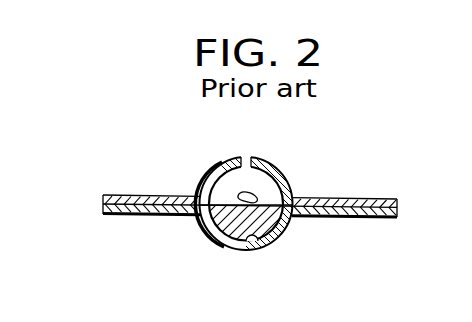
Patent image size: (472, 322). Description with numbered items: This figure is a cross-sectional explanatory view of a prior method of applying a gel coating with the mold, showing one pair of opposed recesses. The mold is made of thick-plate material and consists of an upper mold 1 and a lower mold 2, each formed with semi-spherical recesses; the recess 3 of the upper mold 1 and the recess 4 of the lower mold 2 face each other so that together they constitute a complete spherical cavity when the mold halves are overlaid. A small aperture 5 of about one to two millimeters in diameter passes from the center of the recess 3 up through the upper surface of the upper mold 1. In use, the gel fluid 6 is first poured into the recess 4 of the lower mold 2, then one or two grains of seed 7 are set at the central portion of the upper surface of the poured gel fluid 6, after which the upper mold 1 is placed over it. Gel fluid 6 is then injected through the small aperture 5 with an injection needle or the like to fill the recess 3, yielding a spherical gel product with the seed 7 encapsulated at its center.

The upper mold 1 is at (373, 199).
The lower mold 2 is at (380, 217).
The semi-spherical recess of the upper mold 3 is at (266, 190).
The semi-spherical recess of the lower mold 4 is at (252, 247).
The small aperture 5 is at (248, 157).
The gel fluid 6 is at (222, 226).
The seed 7 is at (243, 193).